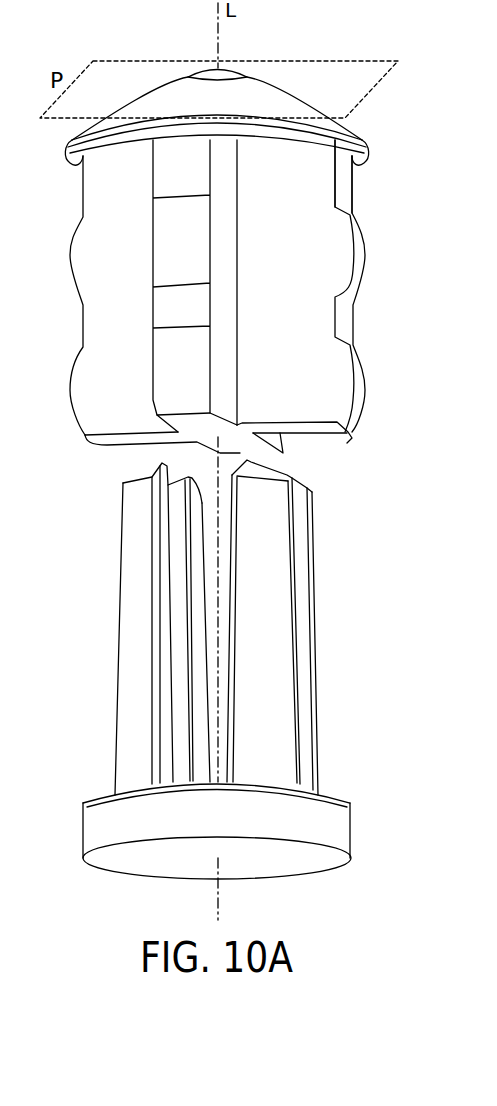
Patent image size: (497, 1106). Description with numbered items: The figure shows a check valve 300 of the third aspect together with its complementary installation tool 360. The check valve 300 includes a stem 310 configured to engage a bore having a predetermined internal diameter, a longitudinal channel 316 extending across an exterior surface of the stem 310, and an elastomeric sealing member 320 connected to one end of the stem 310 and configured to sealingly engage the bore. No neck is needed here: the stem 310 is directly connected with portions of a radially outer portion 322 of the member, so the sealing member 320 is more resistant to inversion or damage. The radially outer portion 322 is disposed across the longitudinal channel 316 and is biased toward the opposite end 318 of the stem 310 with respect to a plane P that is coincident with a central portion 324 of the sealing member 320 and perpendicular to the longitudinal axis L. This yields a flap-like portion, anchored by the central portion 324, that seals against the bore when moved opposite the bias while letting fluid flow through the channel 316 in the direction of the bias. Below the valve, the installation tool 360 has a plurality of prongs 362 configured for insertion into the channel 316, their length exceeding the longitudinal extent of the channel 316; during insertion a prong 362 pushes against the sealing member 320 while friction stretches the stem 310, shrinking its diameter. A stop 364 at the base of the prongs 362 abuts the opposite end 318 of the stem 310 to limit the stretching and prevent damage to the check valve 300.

The check valve 300 is at (83, 195).
The stem 310 is at (342, 437).
The longitudinal channel 316 is at (242, 425).
The opposite end of the stem 318 is at (103, 446).
The elastomeric sealing member 320 is at (350, 128).
The radially outer portion 322 is at (358, 165).
The central portion 324 is at (200, 72).
The installation tool 360 is at (231, 669).
The prongs 362 is at (118, 600).
The stop 364 is at (352, 835).